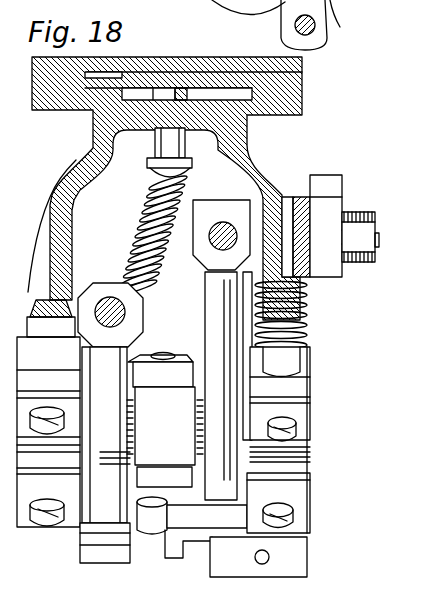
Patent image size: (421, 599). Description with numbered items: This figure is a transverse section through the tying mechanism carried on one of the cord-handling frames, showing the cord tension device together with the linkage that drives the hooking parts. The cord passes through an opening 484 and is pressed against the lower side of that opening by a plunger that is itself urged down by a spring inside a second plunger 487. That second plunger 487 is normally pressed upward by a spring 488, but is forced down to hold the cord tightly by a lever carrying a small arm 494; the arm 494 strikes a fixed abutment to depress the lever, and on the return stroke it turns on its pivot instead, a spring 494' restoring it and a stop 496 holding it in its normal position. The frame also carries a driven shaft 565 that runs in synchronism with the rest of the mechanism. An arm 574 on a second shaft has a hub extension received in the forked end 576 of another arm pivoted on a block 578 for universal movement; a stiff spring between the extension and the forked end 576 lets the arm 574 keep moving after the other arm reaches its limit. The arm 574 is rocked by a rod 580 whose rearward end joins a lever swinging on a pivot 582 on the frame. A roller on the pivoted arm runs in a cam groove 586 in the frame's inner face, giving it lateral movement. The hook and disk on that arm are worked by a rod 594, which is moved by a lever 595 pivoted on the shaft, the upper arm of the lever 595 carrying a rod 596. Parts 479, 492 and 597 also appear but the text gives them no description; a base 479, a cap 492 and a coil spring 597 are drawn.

The base frame 479 is at (230, 555).
The opening 484 is at (268, 556).
The second plunger 487 is at (307, 292).
The spring 488 is at (308, 328).
The cap plate 492 is at (176, 72).
The small arm 494 is at (313, 209).
The spring 494' is at (365, 202).
The stop 496 is at (326, 262).
The shaft 565 is at (40, 399).
The arm 574 is at (218, 342).
The forked end 576 is at (160, 370).
The block 578 is at (165, 437).
The rod 580 is at (196, 251).
The pivot 582 is at (315, 29).
The cam groove 586 is at (115, 206).
The rod 594 is at (160, 500).
The lever 595 is at (110, 530).
The rod 596 is at (118, 314).
The spring 597 is at (127, 239).